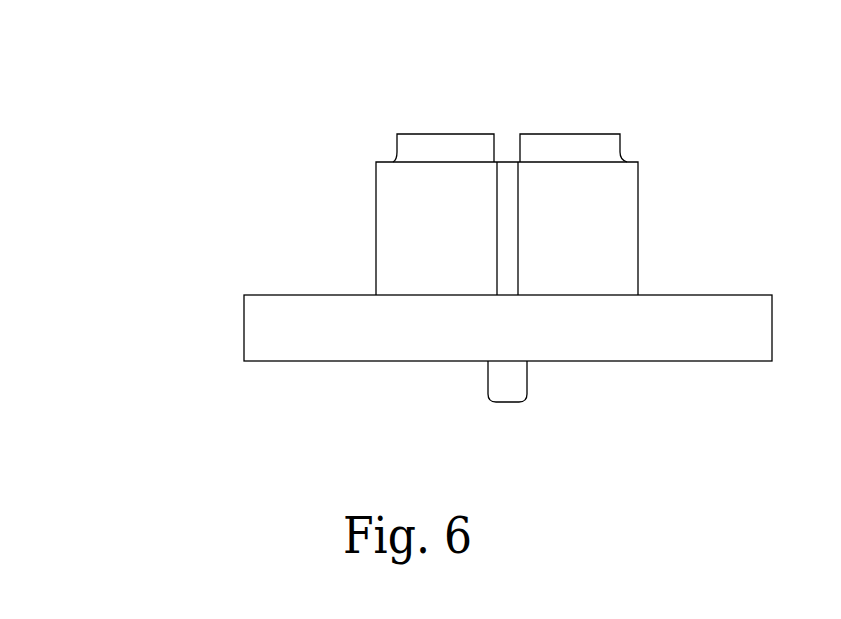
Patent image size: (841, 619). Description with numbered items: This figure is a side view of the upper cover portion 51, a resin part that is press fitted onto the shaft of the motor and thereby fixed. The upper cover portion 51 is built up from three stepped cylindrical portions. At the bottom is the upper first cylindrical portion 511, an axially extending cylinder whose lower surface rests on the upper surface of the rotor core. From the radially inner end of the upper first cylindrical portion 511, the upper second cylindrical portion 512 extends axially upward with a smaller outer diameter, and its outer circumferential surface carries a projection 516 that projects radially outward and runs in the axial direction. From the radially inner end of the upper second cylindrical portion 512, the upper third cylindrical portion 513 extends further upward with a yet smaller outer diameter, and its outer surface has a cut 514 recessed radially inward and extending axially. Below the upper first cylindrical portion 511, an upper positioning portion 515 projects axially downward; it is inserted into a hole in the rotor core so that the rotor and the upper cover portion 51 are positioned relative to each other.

The upper cover portion 51 is at (107, 59).
The upper first cylindrical portion 511 is at (262, 335).
The upper second cylindrical portion 512 is at (392, 217).
The upper third cylindrical portion 513 is at (403, 146).
The cut 514 is at (495, 148).
The upper positioning portion 515 is at (497, 373).
The projection 516 is at (512, 250).